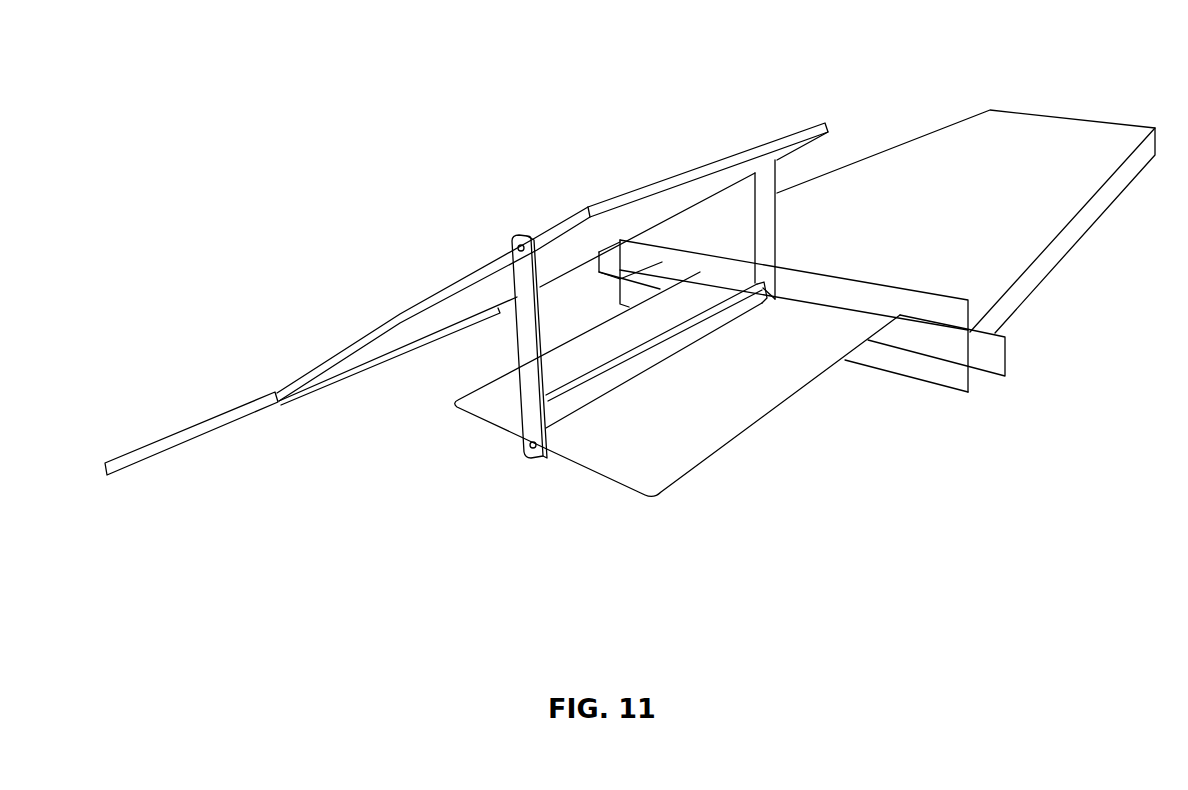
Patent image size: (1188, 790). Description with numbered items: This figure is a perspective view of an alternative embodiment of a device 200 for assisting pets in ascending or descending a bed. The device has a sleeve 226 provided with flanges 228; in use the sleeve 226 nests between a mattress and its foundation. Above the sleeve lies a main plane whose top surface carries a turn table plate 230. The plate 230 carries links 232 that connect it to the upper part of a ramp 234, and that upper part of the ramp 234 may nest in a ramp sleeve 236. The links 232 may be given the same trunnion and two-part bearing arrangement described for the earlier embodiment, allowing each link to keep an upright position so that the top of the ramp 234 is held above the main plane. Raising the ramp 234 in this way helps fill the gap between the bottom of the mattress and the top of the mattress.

The lifting device 200 is at (543, 238).
The sleeve 226 is at (963, 172).
The flanges 228 is at (898, 331).
The turn table plate 230 is at (668, 463).
The links 232 is at (523, 438).
The ramp 234 is at (420, 300).
The ramp sleeve 236 is at (174, 438).